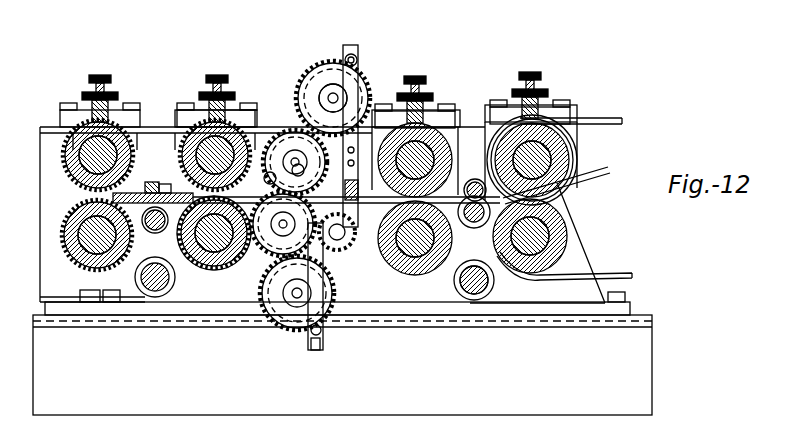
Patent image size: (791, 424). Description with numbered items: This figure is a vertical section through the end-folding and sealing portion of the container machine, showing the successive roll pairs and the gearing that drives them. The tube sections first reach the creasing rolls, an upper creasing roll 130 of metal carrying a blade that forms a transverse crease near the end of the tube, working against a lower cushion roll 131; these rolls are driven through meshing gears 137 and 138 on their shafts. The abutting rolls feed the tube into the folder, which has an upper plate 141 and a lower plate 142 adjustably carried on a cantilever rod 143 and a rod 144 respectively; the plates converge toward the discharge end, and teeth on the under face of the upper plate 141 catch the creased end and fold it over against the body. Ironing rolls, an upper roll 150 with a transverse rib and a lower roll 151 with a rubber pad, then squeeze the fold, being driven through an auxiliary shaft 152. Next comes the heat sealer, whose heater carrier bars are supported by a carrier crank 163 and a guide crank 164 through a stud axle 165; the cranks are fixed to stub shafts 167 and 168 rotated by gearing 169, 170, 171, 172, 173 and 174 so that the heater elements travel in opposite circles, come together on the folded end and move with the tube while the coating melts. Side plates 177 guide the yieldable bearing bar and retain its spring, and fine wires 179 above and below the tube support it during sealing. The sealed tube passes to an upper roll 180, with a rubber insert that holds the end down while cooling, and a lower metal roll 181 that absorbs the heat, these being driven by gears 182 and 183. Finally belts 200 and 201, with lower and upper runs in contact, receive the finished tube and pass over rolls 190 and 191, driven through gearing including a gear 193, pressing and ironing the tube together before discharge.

The upper creasing roll 130 is at (70, 170).
The lower cushion roll 131 is at (77, 265).
The gear 137 is at (73, 203).
The gear 138 is at (62, 133).
The upper plate 141 is at (306, 189).
The lower plate 142 is at (150, 182).
The cantilever rod 143 is at (168, 184).
The rod 144 is at (155, 231).
The upper ironing roll 150 is at (241, 132).
The lower ironing roll 151 is at (172, 290).
The auxiliary shaft 152 is at (150, 302).
The carrier crank 163 is at (357, 213).
The guide crank 164 is at (344, 60).
The stud axle 165 is at (297, 176).
The stub shaft 167 is at (305, 125).
The stub shaft 168 is at (330, 95).
The gear 169 is at (237, 277).
The gear 170 is at (312, 350).
The gear 171 is at (250, 300).
The gear 172 is at (291, 203).
The gear 173 is at (268, 182).
The gear 174 is at (330, 70).
The side plate 177 is at (477, 181).
The fine wire 179 is at (470, 224).
The upper roll 180 is at (457, 128).
The lower roll 181 is at (462, 280).
The gear 182 is at (410, 266).
The gear 183 is at (400, 105).
The roll 190 is at (560, 152).
The roll 191 is at (560, 220).
The gear 193 is at (491, 287).
The belt 200 is at (588, 120).
The belt 201 is at (612, 276).